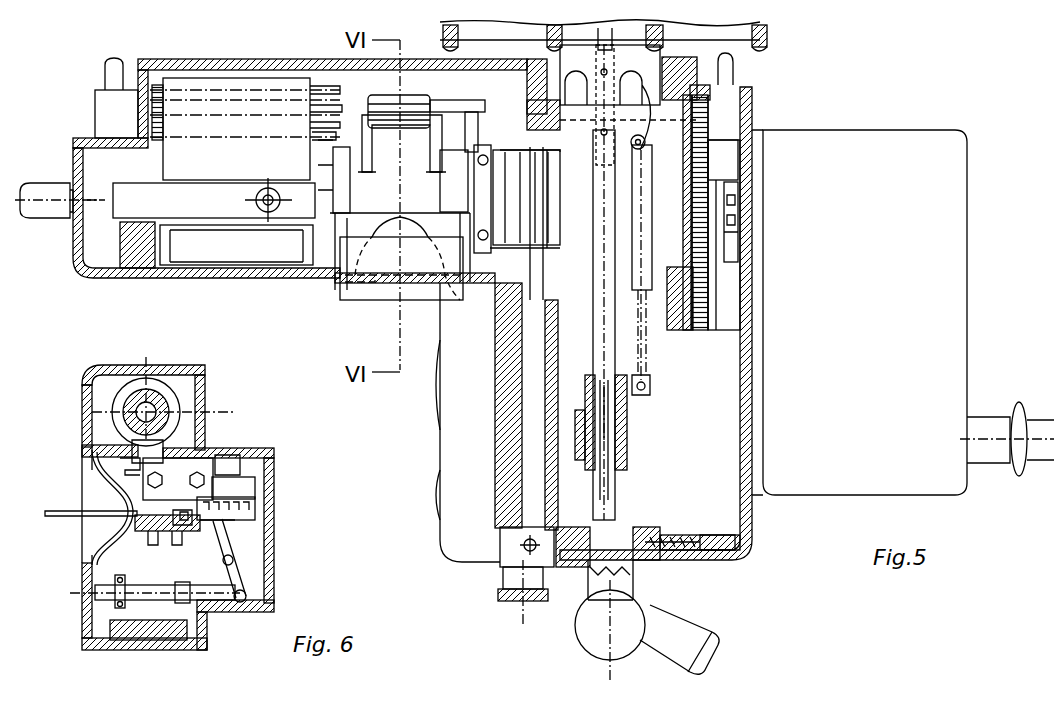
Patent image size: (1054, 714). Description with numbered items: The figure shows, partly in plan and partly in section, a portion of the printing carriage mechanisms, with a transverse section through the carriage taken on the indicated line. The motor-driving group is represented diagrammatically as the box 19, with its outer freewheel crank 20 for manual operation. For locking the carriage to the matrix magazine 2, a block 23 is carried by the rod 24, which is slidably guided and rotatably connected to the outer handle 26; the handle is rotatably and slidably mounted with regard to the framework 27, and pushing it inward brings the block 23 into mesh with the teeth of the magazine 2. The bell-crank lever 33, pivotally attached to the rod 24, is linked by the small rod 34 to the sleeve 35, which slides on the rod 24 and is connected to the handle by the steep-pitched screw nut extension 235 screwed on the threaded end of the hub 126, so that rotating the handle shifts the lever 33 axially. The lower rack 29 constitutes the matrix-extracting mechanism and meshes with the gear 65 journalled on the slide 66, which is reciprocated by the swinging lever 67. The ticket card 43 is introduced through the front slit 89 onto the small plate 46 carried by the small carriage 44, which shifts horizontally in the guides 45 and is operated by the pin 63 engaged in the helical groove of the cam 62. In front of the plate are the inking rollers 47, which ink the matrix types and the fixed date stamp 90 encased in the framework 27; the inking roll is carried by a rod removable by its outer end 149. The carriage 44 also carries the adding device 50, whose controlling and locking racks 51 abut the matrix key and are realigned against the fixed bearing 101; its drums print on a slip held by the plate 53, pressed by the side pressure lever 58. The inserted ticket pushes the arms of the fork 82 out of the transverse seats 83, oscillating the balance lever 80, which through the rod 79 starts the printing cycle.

In FIG. 5, the matrix magazine 2 is at (770, 40).
In FIG. 5, the motor-driving group 19 is at (968, 152).
In FIG. 5, the outer freewheel crank 20 is at (997, 420).
In FIG. 5, the block 23 is at (735, 70).
In FIG. 5, the rod 24 is at (605, 260).
In FIG. 5, the outer handle 26 is at (590, 650).
In FIG. 5, the framework 27 is at (752, 512).
In FIG. 6, the framework 27 is at (205, 642).
In FIG. 5, the rack 29 is at (700, 165).
In FIG. 5, the bell-crank lever 33 is at (645, 148).
In FIG. 5, the small rod 34 is at (645, 235).
In FIG. 5, the sleeve 35 is at (648, 392).
In FIG. 5, the ticket card 43 is at (445, 292).
In FIG. 6, the ticket card 43 is at (55, 515).
In FIG. 5, the small carriage 44 is at (130, 200).
In FIG. 6, the small carriage 44 is at (180, 470).
In FIG. 6, the guides 45 is at (125, 460).
In FIG. 5, the small plate 46 is at (345, 185).
In FIG. 6, the small plate 46 is at (148, 532).
In FIG. 5, the inking rollers 47 is at (540, 185).
In FIG. 5, the adding device 50 is at (190, 98).
In FIG. 6, the adding device 50 is at (240, 490).
In FIG. 5, the controlling and locking racks 51 is at (325, 108).
In FIG. 6, the controlling and locking racks 51 is at (250, 508).
In FIG. 5, the plate 53 is at (208, 248).
In FIG. 5, the side pressure lever 58 is at (47, 190).
In FIG. 6, the cam 62 is at (168, 395).
In FIG. 5, the pin 63 is at (265, 190).
In FIG. 6, the pin 63 is at (140, 445).
In FIG. 5, the gear 65 is at (706, 325).
In FIG. 5, the slide 66 is at (730, 283).
In FIG. 5, the swinging lever 67 is at (732, 200).
In FIG. 5, the rod 79 is at (475, 118).
In FIG. 6, the rod 79 is at (145, 600).
In FIG. 5, the balance lever 80 is at (395, 100).
In FIG. 6, the balance lever 80 is at (240, 568).
In FIG. 5, the fork 82 is at (416, 130).
In FIG. 6, the fork 82 is at (202, 528).
In FIG. 5, the transverse seats 83 is at (440, 178).
In FIG. 6, the front slit 89 is at (127, 512).
In FIG. 5, the fixed date stamp 90 is at (530, 225).
In FIG. 5, the fixed bearing 101 is at (140, 112).
In FIG. 5, the hub 126 is at (635, 580).
In FIG. 5, the outer end 149 is at (517, 605).
In FIG. 5, the steep-pitched screw nut extension 235 is at (628, 445).